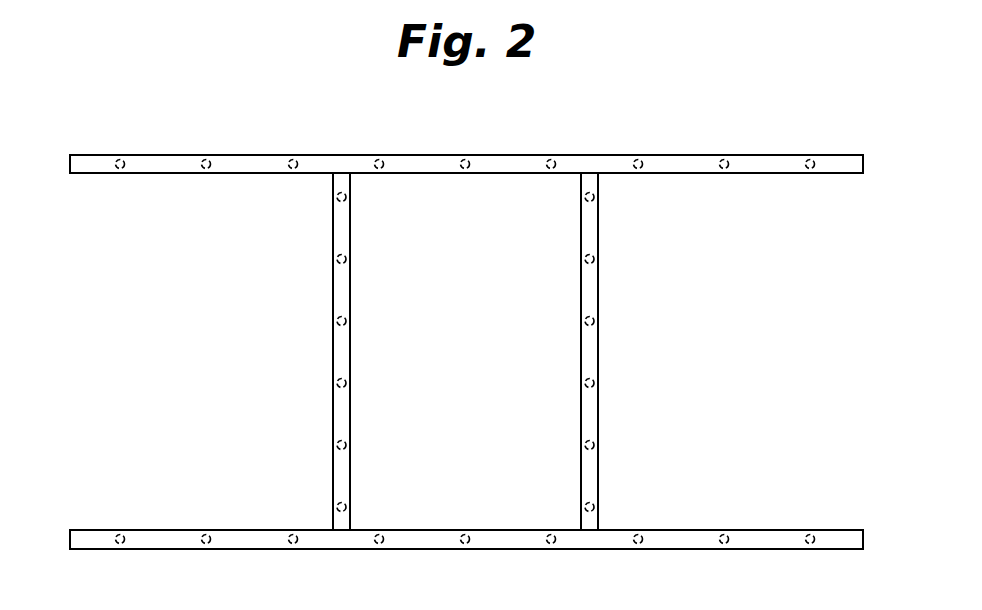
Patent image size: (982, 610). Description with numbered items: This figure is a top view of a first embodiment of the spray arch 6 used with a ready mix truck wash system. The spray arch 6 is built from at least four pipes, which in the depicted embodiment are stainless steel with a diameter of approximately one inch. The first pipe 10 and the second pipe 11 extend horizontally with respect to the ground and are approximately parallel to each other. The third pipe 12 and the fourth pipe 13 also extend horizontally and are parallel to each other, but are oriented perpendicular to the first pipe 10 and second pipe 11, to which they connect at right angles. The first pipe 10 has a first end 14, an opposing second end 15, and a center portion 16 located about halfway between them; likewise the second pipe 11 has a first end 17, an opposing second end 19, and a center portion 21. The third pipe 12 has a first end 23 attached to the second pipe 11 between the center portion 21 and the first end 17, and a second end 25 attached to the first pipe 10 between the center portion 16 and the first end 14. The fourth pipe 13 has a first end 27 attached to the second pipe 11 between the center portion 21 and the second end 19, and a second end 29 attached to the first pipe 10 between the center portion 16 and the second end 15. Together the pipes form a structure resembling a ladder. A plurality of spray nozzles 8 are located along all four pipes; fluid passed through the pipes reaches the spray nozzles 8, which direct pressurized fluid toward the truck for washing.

The spray arch 6 is at (160, 118).
The spray nozzles 8 is at (556, 162).
The first pipe 10 is at (745, 550).
The second pipe 11 is at (767, 160).
The third pipe 12 is at (592, 285).
The fourth pipe 13 is at (340, 298).
The first end 14 is at (858, 532).
The second end 15 is at (87, 538).
The center portion 16 is at (505, 550).
The first end 17 is at (853, 175).
The second end 19 is at (88, 175).
The center portion 21 is at (442, 165).
The first end 23 is at (588, 183).
The second end 25 is at (584, 520).
The first end 27 is at (346, 185).
The second end 29 is at (347, 522).